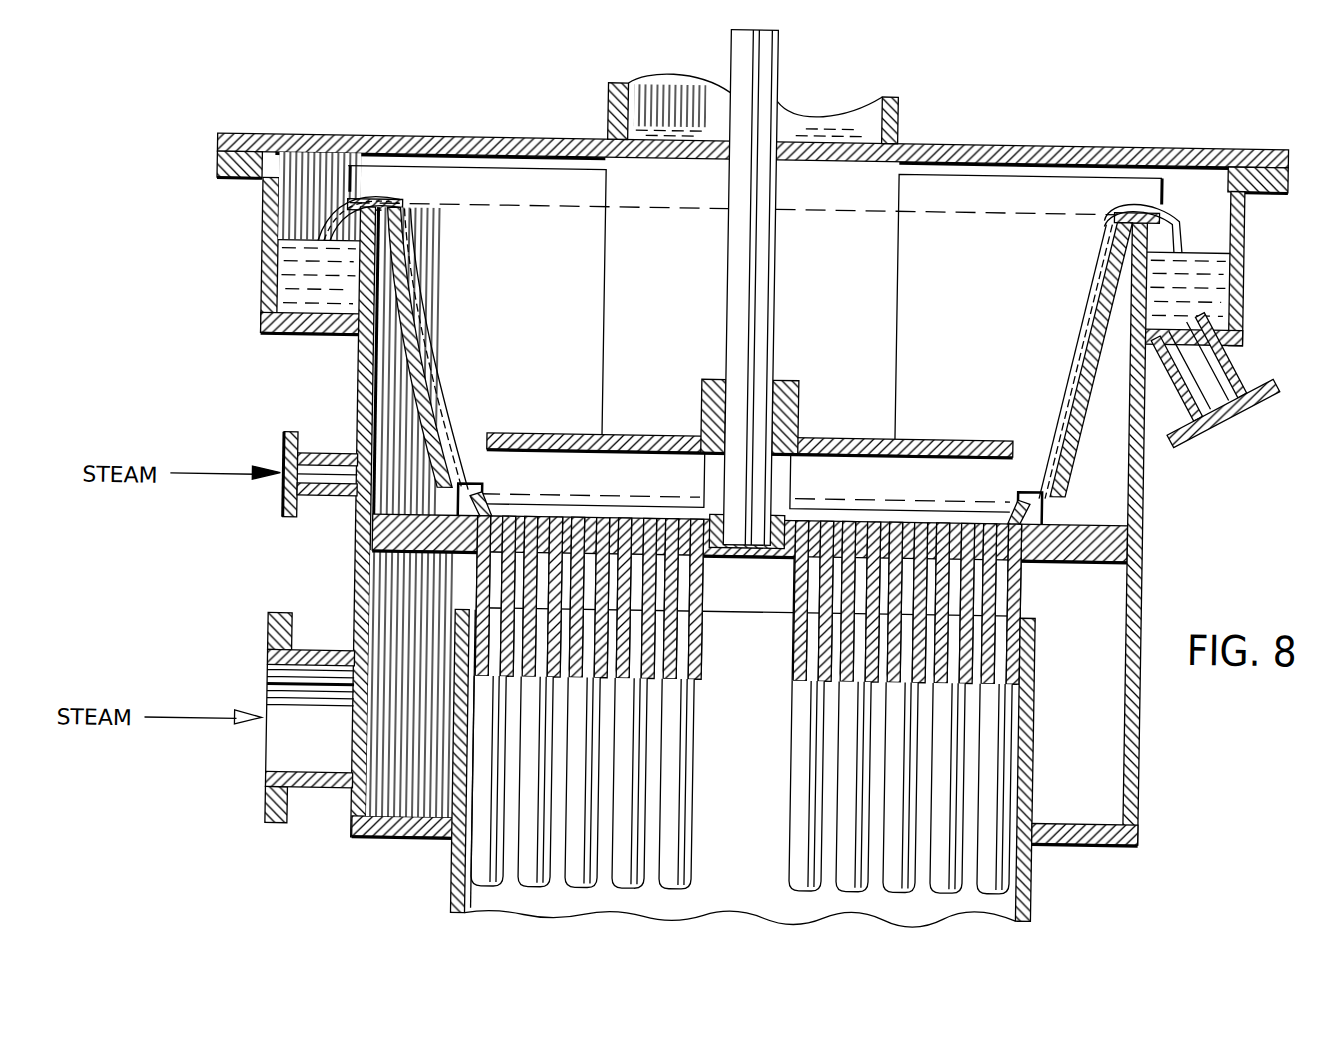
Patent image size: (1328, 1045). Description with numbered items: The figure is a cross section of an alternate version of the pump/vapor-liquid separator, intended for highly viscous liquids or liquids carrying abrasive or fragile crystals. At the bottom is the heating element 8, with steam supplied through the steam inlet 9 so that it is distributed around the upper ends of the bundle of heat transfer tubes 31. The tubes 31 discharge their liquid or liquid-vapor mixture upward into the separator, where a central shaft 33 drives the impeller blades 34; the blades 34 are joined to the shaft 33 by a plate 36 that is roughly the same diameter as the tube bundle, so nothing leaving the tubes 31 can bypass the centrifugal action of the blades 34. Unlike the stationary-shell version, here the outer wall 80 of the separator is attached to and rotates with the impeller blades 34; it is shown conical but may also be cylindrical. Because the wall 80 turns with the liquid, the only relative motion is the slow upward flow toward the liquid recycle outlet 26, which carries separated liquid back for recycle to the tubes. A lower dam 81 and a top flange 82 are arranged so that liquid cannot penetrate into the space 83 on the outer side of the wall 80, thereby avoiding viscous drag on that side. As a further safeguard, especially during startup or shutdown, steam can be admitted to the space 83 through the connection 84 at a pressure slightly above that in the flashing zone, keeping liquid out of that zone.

The heating element 8 is at (458, 883).
The steam inlet 9 is at (289, 757).
The liquid recycle outlet 26 is at (1234, 403).
The heat transfer tubes 31 is at (807, 744).
The shaft 33 is at (768, 60).
The impeller blades 34 is at (596, 289).
The plate 36 is at (836, 436).
The outer wall 80 is at (405, 355).
The lower dam 81 is at (483, 501).
The top flange 82 is at (367, 203).
The space 83 is at (389, 421).
The steam connection 84 is at (334, 504).